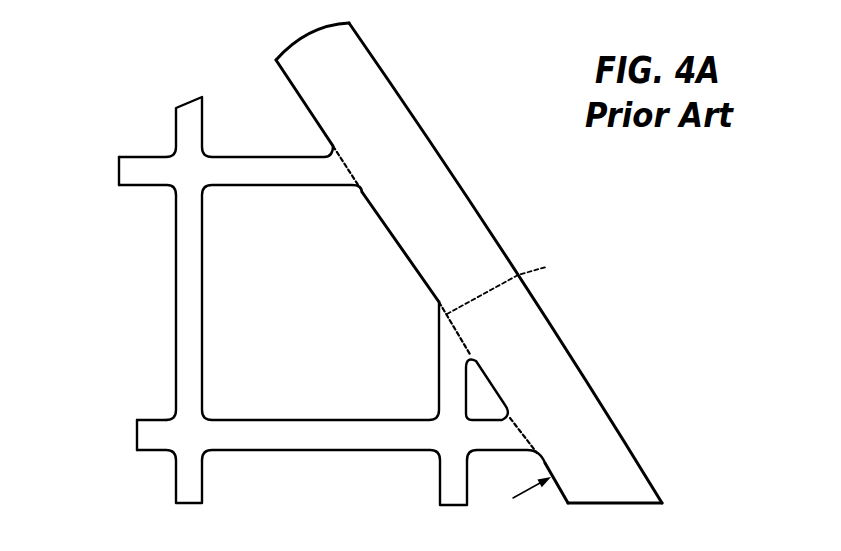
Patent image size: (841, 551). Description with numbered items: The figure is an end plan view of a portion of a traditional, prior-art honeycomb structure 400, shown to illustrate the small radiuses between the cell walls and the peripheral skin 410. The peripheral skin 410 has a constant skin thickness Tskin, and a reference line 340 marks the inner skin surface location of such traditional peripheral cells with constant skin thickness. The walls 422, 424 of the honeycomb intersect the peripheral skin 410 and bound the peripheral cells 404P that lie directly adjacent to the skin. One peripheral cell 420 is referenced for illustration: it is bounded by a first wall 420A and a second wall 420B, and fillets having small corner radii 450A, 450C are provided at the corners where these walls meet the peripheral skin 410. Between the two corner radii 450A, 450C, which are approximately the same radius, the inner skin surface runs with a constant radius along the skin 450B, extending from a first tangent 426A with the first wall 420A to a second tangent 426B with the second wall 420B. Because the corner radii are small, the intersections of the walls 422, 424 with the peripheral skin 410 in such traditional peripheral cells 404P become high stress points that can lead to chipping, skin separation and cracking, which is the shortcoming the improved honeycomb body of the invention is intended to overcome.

The traditional honeycomb structure 400 is at (133, 93).
The peripheral skin 410 is at (384, 50).
The peripheral cell 420 is at (310, 307).
The first wall 420A is at (253, 186).
The second wall 420B is at (287, 419).
The wall 422 is at (119, 174).
The wall 424 is at (190, 504).
The peripheral cell 404P is at (295, 315).
The first tangent 426A is at (347, 186).
The second tangent 426B is at (438, 305).
The corner radius 450A is at (360, 190).
The radius along the skin 450B is at (393, 229).
The corner radius 450C is at (439, 301).
The reference line 340 is at (519, 286).
The skin thickness Tskin is at (633, 429).